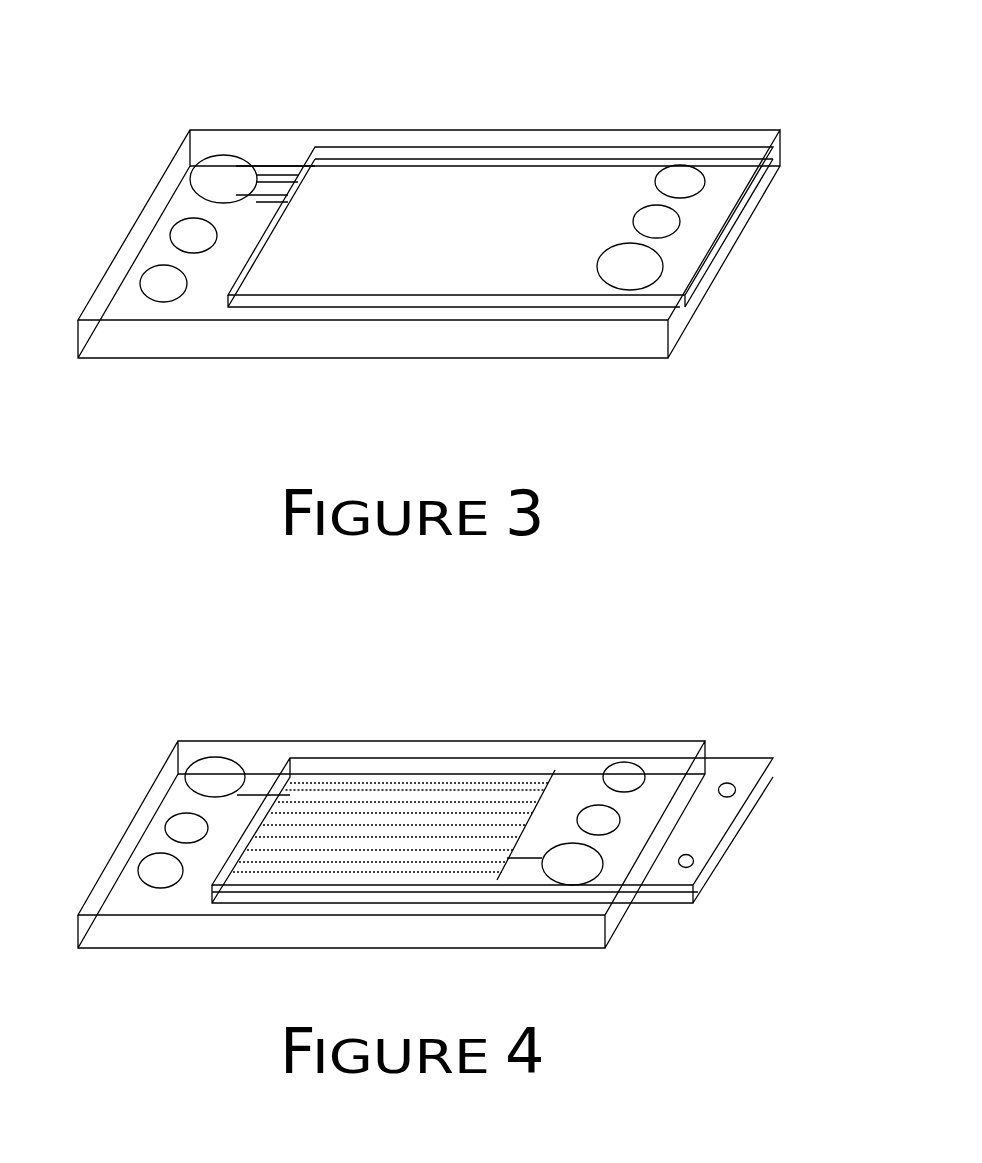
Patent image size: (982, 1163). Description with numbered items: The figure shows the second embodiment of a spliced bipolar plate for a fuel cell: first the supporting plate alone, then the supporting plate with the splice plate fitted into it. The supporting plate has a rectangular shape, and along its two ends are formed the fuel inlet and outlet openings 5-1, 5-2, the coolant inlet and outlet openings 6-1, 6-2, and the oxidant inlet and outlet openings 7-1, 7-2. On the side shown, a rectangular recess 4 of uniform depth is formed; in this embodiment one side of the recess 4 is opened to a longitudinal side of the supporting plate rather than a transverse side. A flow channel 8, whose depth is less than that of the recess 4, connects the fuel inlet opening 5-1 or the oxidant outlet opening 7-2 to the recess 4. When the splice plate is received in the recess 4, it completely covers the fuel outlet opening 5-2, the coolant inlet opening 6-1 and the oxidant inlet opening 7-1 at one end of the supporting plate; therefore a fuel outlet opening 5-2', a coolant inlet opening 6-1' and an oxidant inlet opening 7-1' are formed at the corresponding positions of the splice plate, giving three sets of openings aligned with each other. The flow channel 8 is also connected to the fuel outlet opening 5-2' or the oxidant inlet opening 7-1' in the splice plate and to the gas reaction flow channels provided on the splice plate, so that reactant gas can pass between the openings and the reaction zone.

In FIG. 3, the recess 4 is at (320, 270).
In FIG. 3, the flow channel 8 is at (278, 187).
In FIG. 3, the fuel inlet opening 5-1 is at (213, 177).
In FIG. 3, the fuel outlet opening 5-2 is at (705, 266).
In FIG. 3, the coolant inlet opening 6-1 is at (724, 221).
In FIG. 3, the coolant outlet opening 6-2 is at (188, 237).
In FIG. 3, the oxidant inlet opening 7-1 is at (743, 181).
In FIG. 3, the oxidant outlet opening 7-2 is at (157, 283).
In FIG. 4, the oxidant inlet opening 7-1' is at (718, 777).
In FIG. 4, the coolant inlet opening 6-1' is at (694, 820).
In FIG. 4, the fuel outlet opening 5-2' is at (666, 864).